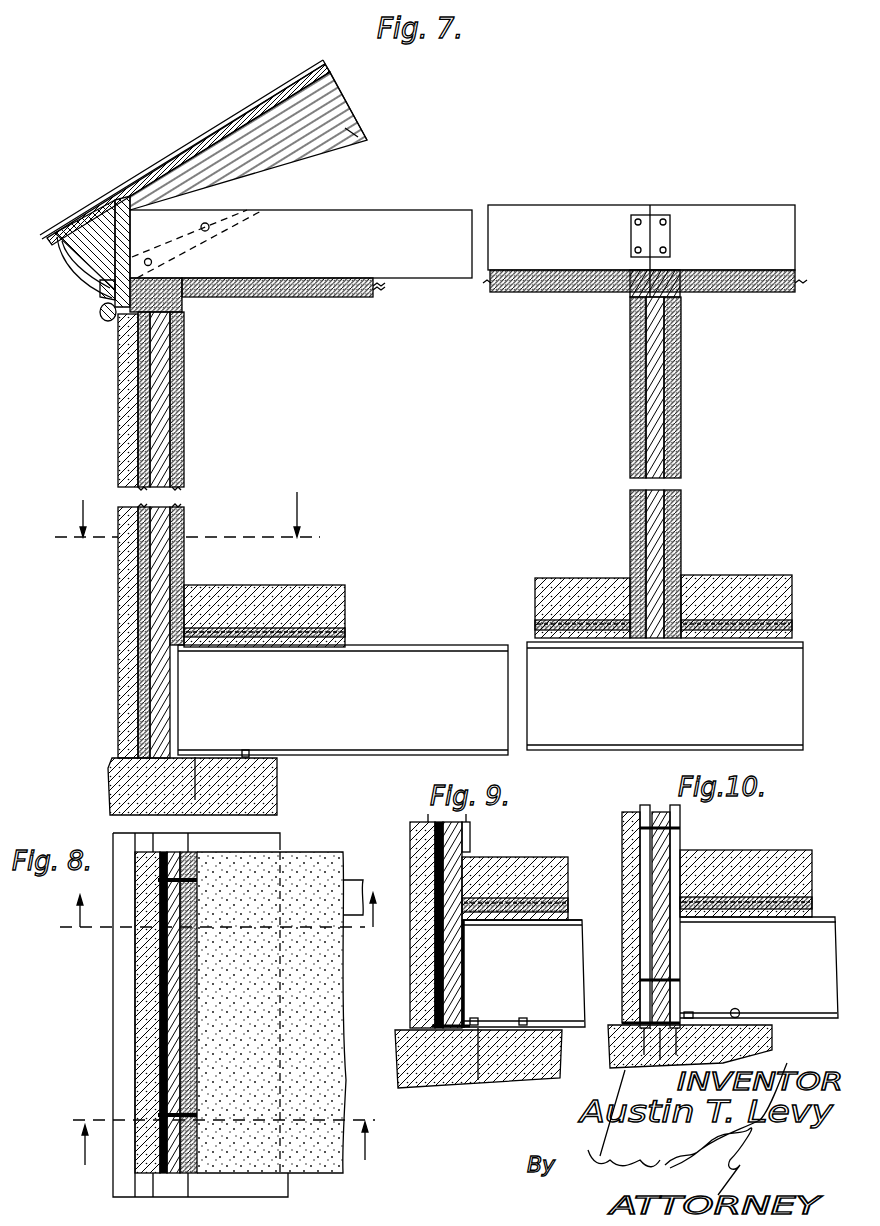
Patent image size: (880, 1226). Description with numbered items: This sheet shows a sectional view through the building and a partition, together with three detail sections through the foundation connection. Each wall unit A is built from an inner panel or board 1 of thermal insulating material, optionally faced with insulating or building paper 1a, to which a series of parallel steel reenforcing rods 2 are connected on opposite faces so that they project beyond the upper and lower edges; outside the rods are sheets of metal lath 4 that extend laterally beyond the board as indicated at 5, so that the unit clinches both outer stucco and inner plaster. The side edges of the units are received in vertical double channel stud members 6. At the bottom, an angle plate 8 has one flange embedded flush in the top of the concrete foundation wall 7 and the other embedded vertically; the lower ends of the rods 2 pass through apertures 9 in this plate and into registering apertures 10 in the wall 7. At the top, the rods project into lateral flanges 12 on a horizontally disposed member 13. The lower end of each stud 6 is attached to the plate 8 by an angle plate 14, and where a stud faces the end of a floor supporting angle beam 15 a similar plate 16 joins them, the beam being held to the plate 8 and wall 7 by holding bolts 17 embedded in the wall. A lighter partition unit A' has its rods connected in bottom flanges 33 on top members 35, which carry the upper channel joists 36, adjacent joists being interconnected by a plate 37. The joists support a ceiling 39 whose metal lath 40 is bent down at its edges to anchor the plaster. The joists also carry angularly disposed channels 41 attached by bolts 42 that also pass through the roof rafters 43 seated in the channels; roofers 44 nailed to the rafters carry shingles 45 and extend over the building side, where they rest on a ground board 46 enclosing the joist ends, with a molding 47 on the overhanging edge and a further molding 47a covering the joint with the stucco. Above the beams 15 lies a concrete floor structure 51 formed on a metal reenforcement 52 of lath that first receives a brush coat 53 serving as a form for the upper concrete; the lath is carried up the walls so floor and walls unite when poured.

In FIG. 7, the inner panel or board 1 is at (176, 420).
In FIG. 8, the inner panel or board 1 is at (137, 982).
In FIG. 9, the inner panel or board 1 is at (450, 845).
In FIG. 10, the inner panel or board 1 is at (674, 826).
In FIG. 7, the insulating or building paper 1a is at (166, 447).
In FIG. 8, the insulating or building paper 1a is at (150, 1012).
In FIG. 9, the insulating or building paper 1a is at (455, 858).
In FIG. 10, the insulating or building paper 1a is at (676, 841).
In FIG. 8, the steel reenforcing rods 2 is at (152, 1113).
In FIG. 10, the steel reenforcing rods 2 is at (645, 828).
In FIG. 7, the reenforcing sheets of metal wire or expanded metal lath 4 is at (140, 412).
In FIG. 8, the reenforcing sheets of metal wire or expanded metal lath 4 is at (135, 955).
In FIG. 9, the reenforcing sheets of metal wire or expanded metal lath 4 is at (428, 816).
In FIG. 10, the reenforcing sheets of metal wire or expanded metal lath 4 is at (641, 803).
In FIG. 8, the lateral extension of lath 5 is at (140, 900).
In FIG. 8, the double channel or stud member 6 is at (152, 887).
In FIG. 9, the double channel or stud member 6 is at (468, 985).
In FIG. 7, the concrete foundation wall 7 is at (116, 800).
In FIG. 8, the concrete foundation wall 7 is at (275, 838).
In FIG. 9, the concrete foundation wall 7 is at (430, 1082).
In FIG. 10, the concrete foundation wall 7 is at (612, 1064).
In FIG. 7, the angle plate 8 is at (127, 753).
In FIG. 8, the angle plate 8 is at (158, 1195).
In FIG. 9, the angle plate 8 is at (452, 1082).
In FIG. 10, the angle plate 8 is at (666, 1060).
In FIG. 8, the apertures 9 is at (225, 910).
In FIG. 10, the apertures 9 is at (645, 1022).
In FIG. 8, the apertures 10 is at (224, 1142).
In FIG. 10, the apertures 10 is at (648, 1058).
In FIG. 7, the lateral flanges 12 is at (175, 292).
In FIG. 7, the horizontally disposed member 13 is at (160, 278).
In FIG. 9, the angle plate 14 is at (432, 1026).
In FIG. 7, the floor supporting angle beam 15 is at (392, 652).
In FIG. 8, the floor supporting angle beam 15 is at (356, 882).
In FIG. 9, the floor supporting angle beam 15 is at (567, 1012).
In FIG. 10, the floor supporting angle beam 15 is at (818, 1008).
In FIG. 9, the plate 16 is at (478, 921).
In FIG. 7, the holding bolts 17 is at (243, 752).
In FIG. 9, the holding bolts 17 is at (522, 1017).
In FIG. 10, the holding bolts 17 is at (735, 1010).
In FIG. 7, the bottom flanges 33 is at (632, 298).
In FIG. 7, the top members 35 is at (633, 268).
In FIG. 7, the upper channel joists 36 is at (687, 204).
In FIG. 7, the plate 37 is at (672, 235).
In FIG. 7, the ceiling 39 is at (341, 295).
In FIG. 7, the metal lath 40 is at (380, 290).
In FIG. 7, the angularly disposed channels 41 is at (338, 152).
In FIG. 7, the bolts 42 is at (205, 223).
In FIG. 7, the roof rafters 43 is at (343, 104).
In FIG. 7, the roofers 44 is at (327, 64).
In FIG. 7, the shingles 45 is at (97, 206).
In FIG. 7, the vertical top plate member or ground board 46 is at (105, 284).
In FIG. 7, the molding 47 is at (85, 265).
In FIG. 7, the molding 47a is at (112, 306).
In FIG. 7, the floor structure 51 is at (283, 575).
In FIG. 8, the floor structure 51 is at (325, 852).
In FIG. 9, the floor structure 51 is at (525, 858).
In FIG. 10, the floor structure 51 is at (752, 852).
In FIG. 7, the metal reenforcement 52 is at (343, 629).
In FIG. 9, the metal reenforcement 52 is at (572, 901).
In FIG. 10, the metal reenforcement 52 is at (812, 897).
In FIG. 7, the brush coat 53 is at (308, 652).
In FIG. 9, the brush coat 53 is at (547, 917).
In FIG. 10, the brush coat 53 is at (760, 912).
In FIG. 7, the unit A is at (175, 481).
In FIG. 9, the unit A is at (421, 925).
In FIG. 10, the unit A is at (634, 852).
In FIG. 7, the partition unit A' is at (642, 467).